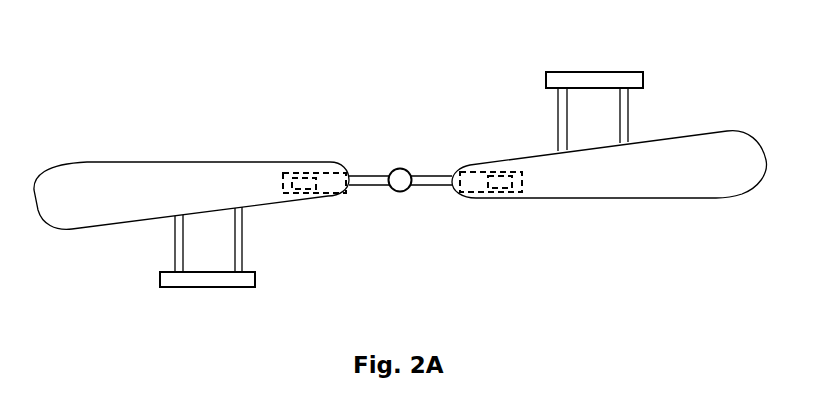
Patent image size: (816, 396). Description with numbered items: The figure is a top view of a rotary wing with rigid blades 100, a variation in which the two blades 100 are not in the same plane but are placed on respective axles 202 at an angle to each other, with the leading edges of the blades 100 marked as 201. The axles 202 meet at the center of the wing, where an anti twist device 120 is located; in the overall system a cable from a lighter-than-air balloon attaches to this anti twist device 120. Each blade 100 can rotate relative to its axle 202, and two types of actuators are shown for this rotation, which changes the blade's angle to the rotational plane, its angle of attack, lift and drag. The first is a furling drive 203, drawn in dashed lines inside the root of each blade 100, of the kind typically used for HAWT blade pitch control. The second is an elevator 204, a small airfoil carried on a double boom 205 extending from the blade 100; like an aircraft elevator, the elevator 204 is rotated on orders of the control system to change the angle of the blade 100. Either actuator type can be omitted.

The airfoil blade 100 is at (396, 186).
The leading edge 201 is at (170, 162).
The axle 202 is at (338, 190).
The furling drive 203 is at (290, 172).
The anti twist device 120 is at (397, 169).
The elevator 204 is at (600, 77).
The double boom 205 is at (629, 98).